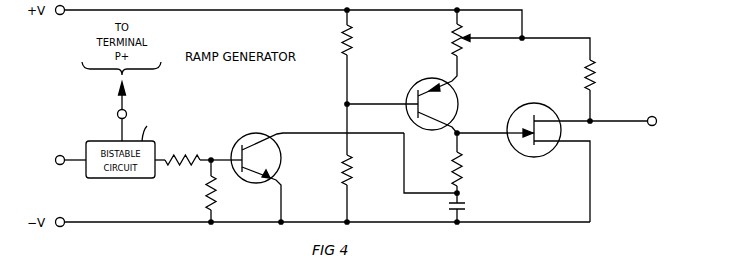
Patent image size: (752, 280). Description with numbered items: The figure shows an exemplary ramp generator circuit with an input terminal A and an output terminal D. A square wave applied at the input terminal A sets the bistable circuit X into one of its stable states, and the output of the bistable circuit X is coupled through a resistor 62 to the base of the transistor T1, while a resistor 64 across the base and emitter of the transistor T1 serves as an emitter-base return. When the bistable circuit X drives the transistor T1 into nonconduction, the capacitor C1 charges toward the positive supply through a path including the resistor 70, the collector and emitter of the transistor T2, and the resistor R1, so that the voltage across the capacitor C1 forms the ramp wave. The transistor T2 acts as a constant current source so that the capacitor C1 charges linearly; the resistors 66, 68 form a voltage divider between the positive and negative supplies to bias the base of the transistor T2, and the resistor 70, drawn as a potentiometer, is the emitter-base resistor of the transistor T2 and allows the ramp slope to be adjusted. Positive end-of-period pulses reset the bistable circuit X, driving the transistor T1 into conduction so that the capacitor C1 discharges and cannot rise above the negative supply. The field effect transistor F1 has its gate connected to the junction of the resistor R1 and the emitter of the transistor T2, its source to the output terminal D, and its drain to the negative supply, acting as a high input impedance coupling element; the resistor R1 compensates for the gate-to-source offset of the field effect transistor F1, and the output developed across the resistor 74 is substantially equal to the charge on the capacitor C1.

The resistor 62 is at (177, 158).
The resistor 64 is at (215, 190).
The resistor 66 is at (351, 48).
The resistor 68 is at (351, 172).
The resistor 70 is at (449, 45).
The resistor 74 is at (584, 78).
The transistor T1 is at (279, 150).
The transistor T2 is at (455, 86).
The field effect transistor F1 is at (538, 107).
The resistor R1 is at (463, 173).
The capacitor C1 is at (465, 208).
The bistable circuit X is at (149, 127).
The input terminal A is at (63, 154).
The output terminal D is at (630, 122).